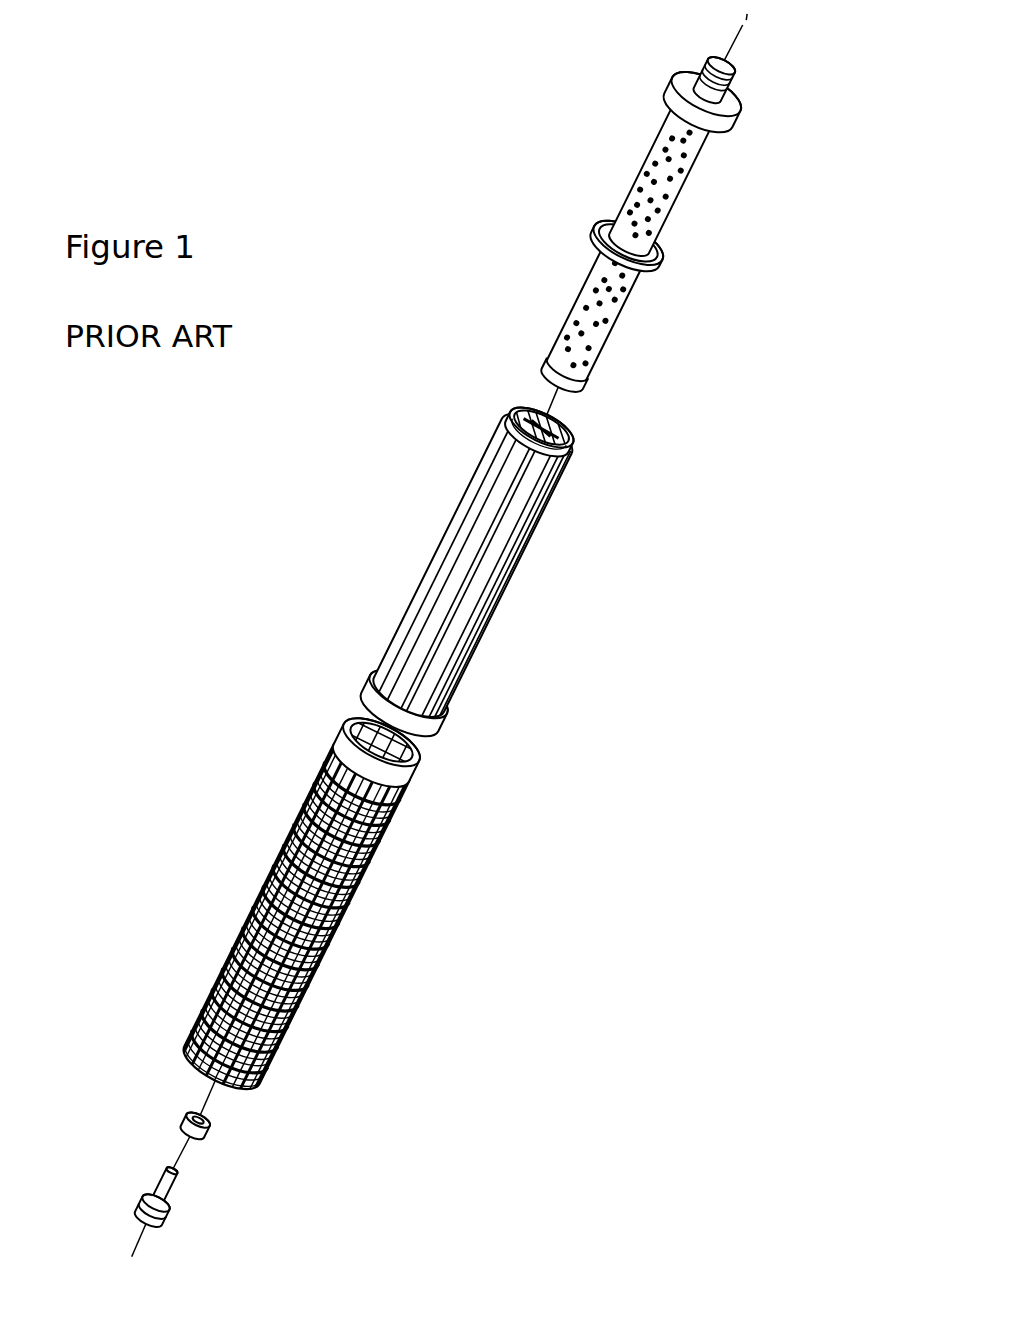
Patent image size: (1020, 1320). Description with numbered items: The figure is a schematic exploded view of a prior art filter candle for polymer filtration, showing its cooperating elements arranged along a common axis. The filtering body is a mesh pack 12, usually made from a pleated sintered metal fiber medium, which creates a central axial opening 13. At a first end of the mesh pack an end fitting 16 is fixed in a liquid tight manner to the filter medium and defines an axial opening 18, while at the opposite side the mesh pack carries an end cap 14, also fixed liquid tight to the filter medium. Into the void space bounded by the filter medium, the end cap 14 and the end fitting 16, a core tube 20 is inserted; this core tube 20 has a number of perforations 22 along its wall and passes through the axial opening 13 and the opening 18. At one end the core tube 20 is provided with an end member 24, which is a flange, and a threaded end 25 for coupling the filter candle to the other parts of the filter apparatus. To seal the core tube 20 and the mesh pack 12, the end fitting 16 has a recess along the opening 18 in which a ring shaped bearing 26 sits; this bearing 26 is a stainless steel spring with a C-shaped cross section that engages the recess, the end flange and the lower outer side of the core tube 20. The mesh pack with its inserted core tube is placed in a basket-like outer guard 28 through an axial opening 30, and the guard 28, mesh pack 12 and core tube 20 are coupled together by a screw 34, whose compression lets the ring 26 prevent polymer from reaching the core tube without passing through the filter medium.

The mesh pack 12 is at (424, 604).
The axial opening 13 is at (542, 411).
The end cap 14 is at (372, 677).
The end fitting 16 is at (506, 416).
The axial opening of the end fitting 18 is at (572, 420).
The core tube 20 is at (666, 134).
The perforations 22 is at (568, 330).
The end member 24 is at (668, 87).
The threaded end 25 is at (702, 62).
The ring shaped bearing 26 is at (660, 264).
The outer guard 28 is at (266, 884).
The axial opening of the guard 30 is at (342, 735).
The screw 34 is at (171, 1189).